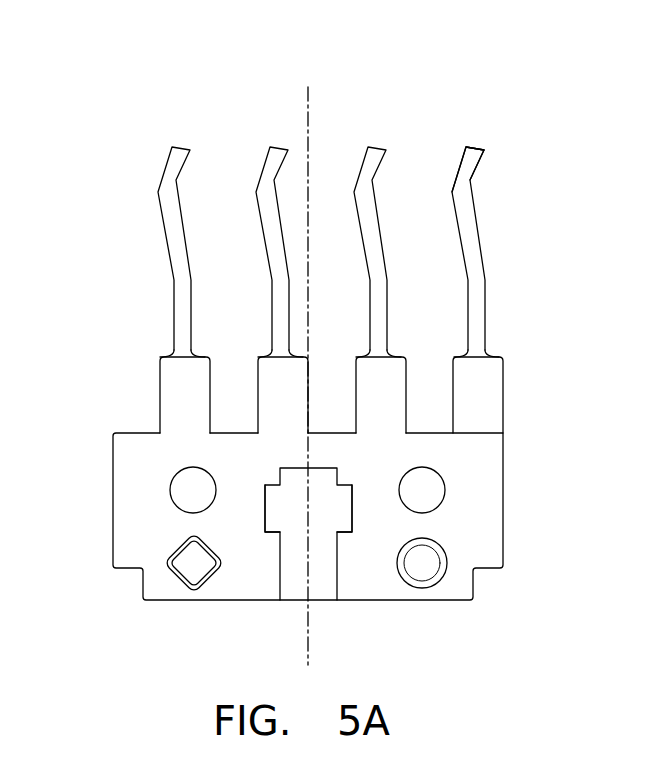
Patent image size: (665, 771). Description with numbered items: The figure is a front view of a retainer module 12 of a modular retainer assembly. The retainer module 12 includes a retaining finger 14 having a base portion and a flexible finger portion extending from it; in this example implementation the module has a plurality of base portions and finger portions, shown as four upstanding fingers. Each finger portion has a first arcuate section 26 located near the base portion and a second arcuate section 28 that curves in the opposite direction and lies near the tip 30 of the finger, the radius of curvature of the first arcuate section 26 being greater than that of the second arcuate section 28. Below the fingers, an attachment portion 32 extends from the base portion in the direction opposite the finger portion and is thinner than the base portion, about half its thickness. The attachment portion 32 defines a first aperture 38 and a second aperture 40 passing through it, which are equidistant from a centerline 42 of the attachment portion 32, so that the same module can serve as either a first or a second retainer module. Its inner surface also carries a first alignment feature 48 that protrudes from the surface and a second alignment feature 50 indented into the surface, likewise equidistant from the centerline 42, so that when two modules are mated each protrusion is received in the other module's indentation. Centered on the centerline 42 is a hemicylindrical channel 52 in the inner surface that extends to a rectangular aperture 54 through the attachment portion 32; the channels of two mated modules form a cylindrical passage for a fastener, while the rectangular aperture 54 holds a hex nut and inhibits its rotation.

The retainer module 12 is at (145, 118).
The retaining finger 14 is at (178, 303).
The first arcuate section 26 is at (480, 277).
The second arcuate section 28 is at (472, 200).
The tip 30 is at (478, 152).
The attachment portion 32 is at (125, 503).
The first aperture 38 is at (187, 490).
The second aperture 40 is at (427, 490).
The centerline 42 is at (308, 98).
The first alignment feature 48 is at (190, 567).
The second alignment feature 50 is at (430, 563).
The hemicylindrical channel 52 is at (297, 590).
The rectangular aperture 54 is at (338, 525).